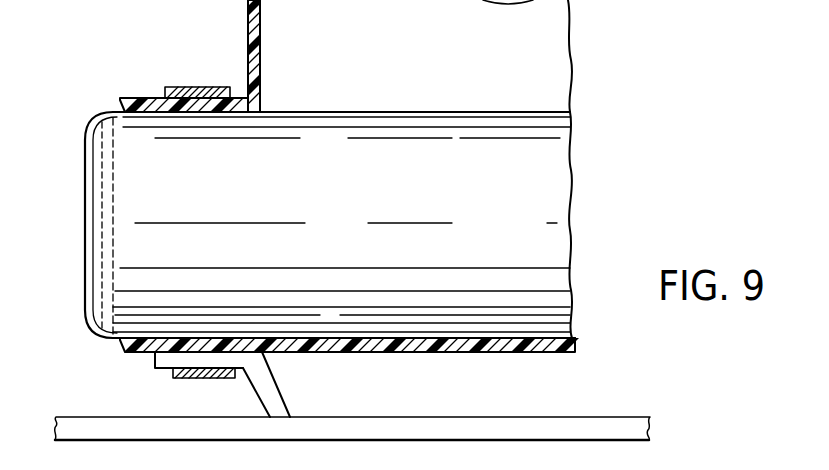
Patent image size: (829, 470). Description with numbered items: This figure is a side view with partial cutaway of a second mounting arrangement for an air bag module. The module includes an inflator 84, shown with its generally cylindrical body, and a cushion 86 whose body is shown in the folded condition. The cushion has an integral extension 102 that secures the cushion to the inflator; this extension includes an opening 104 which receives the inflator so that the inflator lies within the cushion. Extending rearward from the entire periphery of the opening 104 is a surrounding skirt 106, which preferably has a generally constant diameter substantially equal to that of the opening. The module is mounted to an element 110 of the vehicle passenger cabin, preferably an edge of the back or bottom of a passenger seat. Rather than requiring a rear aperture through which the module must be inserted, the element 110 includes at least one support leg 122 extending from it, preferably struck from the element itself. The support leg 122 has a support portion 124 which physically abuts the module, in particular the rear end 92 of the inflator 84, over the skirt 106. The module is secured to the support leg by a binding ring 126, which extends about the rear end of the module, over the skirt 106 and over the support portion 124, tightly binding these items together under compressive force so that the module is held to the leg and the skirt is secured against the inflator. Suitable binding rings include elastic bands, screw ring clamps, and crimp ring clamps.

The inflator 84 is at (512, 227).
The cushion 86 is at (510, 62).
The rear end 92 is at (88, 205).
The extension 102 is at (262, 42).
The opening 104 is at (248, 117).
The skirt 106 is at (123, 100).
The element 110 is at (440, 417).
The support leg 122 is at (277, 377).
The support portion 124 is at (157, 366).
The binding ring 126 is at (183, 88).